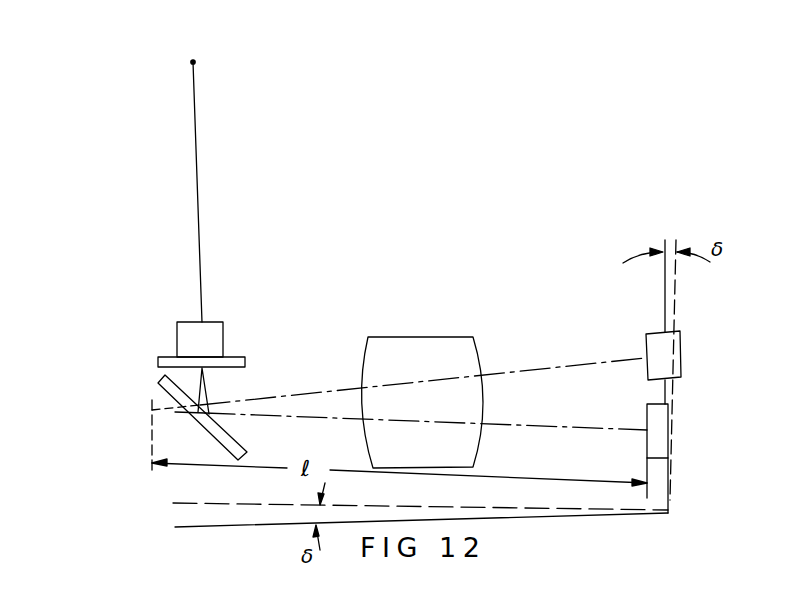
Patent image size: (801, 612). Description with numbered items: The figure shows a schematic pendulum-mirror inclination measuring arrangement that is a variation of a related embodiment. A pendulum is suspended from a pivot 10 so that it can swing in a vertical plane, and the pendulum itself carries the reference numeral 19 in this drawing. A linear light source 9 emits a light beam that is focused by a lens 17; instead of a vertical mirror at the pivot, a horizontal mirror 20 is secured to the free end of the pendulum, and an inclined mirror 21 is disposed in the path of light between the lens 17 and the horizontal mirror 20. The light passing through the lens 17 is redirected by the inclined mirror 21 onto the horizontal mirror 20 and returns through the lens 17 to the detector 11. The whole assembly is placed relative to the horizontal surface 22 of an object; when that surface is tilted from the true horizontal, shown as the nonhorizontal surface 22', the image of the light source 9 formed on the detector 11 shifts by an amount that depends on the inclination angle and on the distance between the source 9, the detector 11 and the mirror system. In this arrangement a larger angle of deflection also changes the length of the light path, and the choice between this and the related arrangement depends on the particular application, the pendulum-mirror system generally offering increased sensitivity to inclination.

The linear light source 9 is at (668, 433).
The pivot 10 is at (195, 62).
The detector 11 is at (680, 345).
The lens 17 is at (400, 335).
The pendulum 19 is at (163, 288).
The horizontal mirror 20 is at (232, 368).
The inclined mirror 21 is at (160, 380).
The horizontal surface 22 is at (421, 536).
The nonhorizontal surface 22' is at (420, 492).